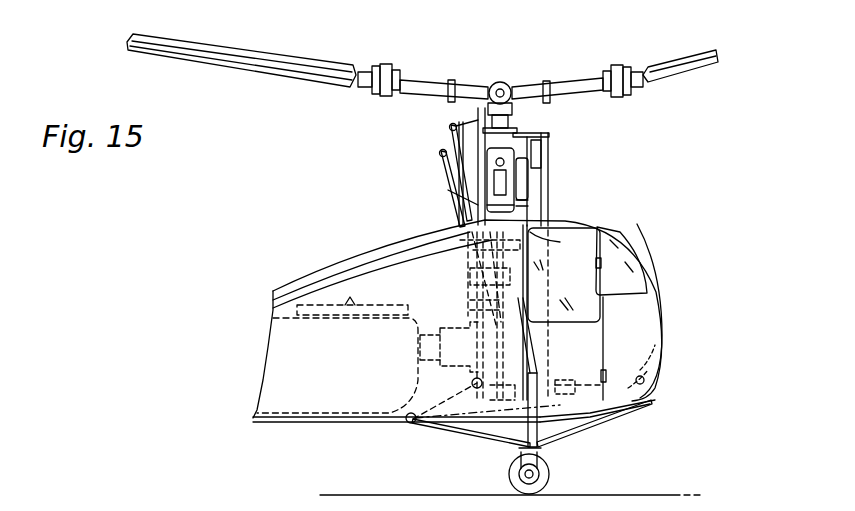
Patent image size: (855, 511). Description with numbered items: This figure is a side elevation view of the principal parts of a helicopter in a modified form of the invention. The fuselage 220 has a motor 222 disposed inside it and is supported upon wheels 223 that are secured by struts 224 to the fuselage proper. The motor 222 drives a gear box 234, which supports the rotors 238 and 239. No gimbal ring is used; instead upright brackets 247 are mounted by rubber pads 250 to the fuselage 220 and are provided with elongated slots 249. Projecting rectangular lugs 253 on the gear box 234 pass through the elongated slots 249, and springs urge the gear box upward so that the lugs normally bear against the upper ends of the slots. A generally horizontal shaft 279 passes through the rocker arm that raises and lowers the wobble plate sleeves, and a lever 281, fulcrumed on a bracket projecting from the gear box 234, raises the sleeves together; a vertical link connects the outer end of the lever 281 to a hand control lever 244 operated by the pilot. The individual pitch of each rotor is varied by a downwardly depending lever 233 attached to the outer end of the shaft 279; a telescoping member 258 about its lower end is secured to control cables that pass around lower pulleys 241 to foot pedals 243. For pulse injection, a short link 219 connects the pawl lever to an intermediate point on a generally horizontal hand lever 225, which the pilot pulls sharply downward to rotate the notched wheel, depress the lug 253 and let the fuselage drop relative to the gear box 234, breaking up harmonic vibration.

The rotor 238 is at (488, 84).
The rotor 239 is at (514, 85).
The gear box 234 is at (470, 118).
The lever 281 is at (452, 126).
The horizontal shaft 279 is at (547, 140).
The downwardly depending lever 233 is at (544, 152).
The upright bracket 247 is at (560, 166).
The elongated slot 249 is at (529, 186).
The short link 219 is at (445, 185).
The projecting rectangular lug 253 is at (490, 182).
The telescoping member 258 is at (560, 213).
The hand lever 225 is at (400, 241).
The rubber pad 250 is at (540, 240).
The hand control lever 244 is at (552, 384).
The foot pedal 243 is at (660, 360).
The lower pulley 241 is at (622, 410).
The strut 224 is at (560, 420).
The wheel 223 is at (548, 462).
The motor 222 is at (295, 416).
The fuselage 220 is at (353, 424).